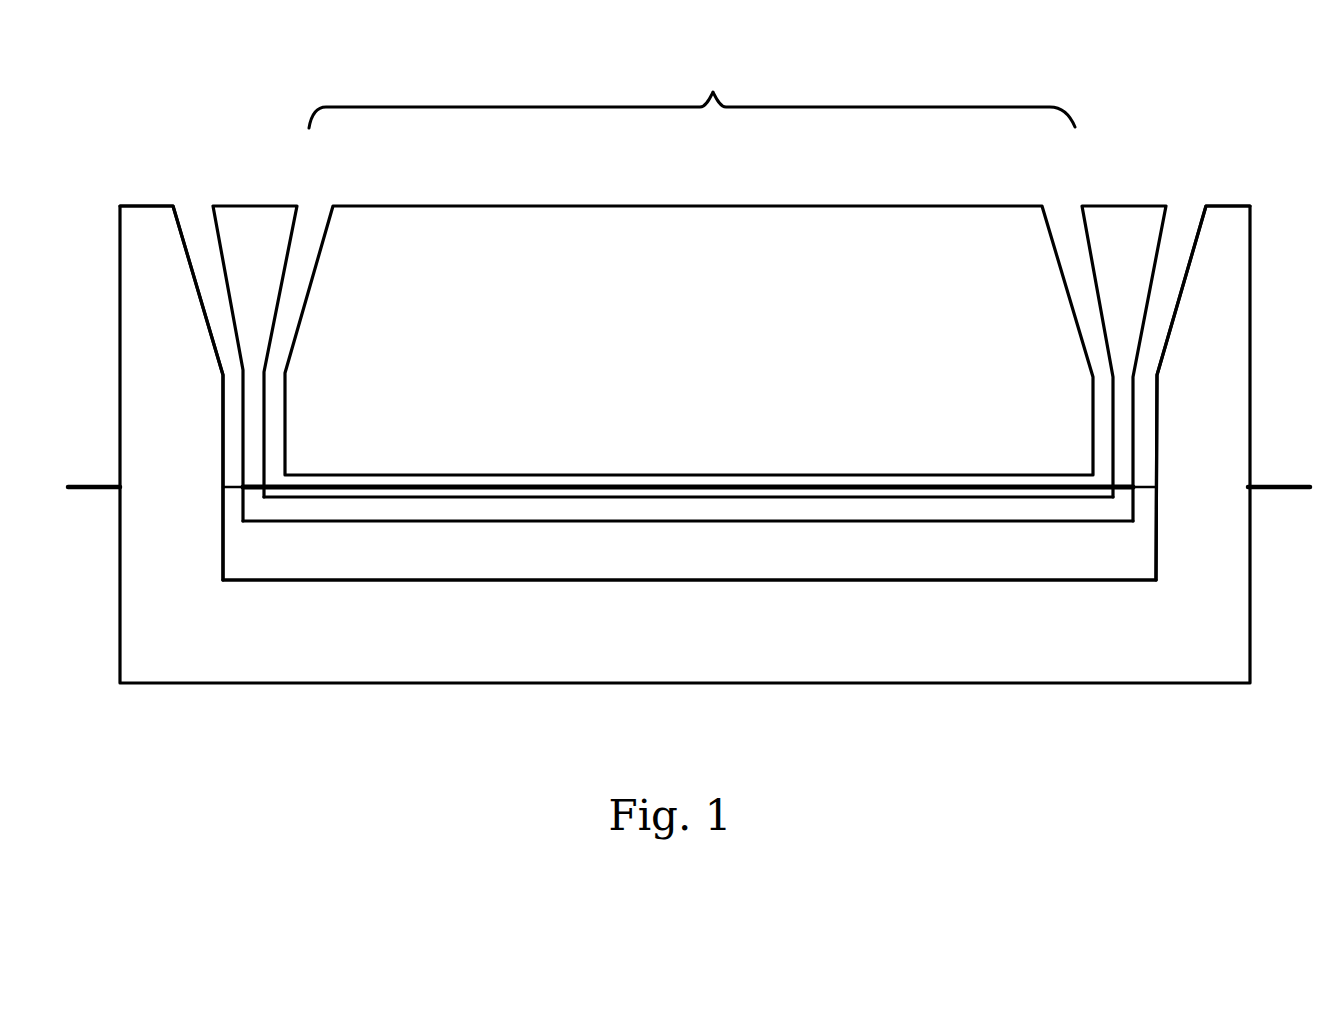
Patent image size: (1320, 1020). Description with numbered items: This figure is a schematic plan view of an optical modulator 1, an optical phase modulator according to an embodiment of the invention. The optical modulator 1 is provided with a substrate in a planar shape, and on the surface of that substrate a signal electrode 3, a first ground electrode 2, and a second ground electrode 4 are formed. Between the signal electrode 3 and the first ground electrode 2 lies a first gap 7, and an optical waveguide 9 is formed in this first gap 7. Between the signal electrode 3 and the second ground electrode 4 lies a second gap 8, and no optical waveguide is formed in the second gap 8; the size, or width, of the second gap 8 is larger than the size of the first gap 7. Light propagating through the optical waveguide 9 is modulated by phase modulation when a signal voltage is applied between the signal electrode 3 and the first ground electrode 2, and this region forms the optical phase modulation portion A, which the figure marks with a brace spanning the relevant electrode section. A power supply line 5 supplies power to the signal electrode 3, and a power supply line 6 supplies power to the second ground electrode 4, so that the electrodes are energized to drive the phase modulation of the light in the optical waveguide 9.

The optical modulator 1 is at (1268, 188).
The first ground electrode 2 is at (872, 217).
The signal electrode 3 is at (868, 507).
The second ground electrode 4 is at (888, 670).
The power supply line to the signal electrode 5 is at (253, 217).
The power supply line to the second ground electrode 6 is at (157, 227).
The first gap 7 is at (580, 476).
The second gap 8 is at (600, 580).
The optical waveguide 9 is at (1272, 488).
The optical phase modulation portion A is at (692, 89).